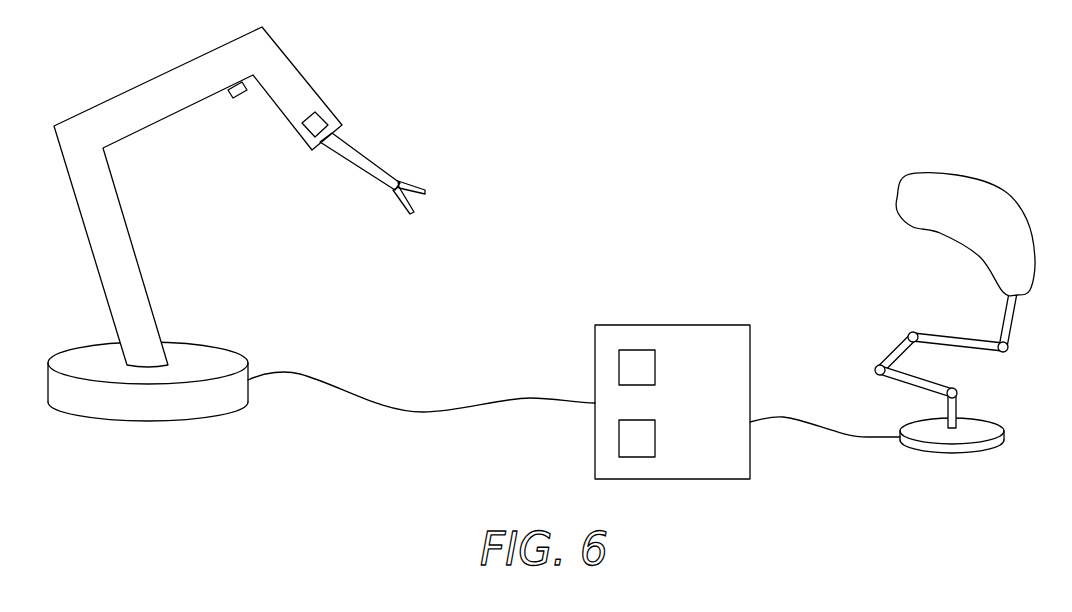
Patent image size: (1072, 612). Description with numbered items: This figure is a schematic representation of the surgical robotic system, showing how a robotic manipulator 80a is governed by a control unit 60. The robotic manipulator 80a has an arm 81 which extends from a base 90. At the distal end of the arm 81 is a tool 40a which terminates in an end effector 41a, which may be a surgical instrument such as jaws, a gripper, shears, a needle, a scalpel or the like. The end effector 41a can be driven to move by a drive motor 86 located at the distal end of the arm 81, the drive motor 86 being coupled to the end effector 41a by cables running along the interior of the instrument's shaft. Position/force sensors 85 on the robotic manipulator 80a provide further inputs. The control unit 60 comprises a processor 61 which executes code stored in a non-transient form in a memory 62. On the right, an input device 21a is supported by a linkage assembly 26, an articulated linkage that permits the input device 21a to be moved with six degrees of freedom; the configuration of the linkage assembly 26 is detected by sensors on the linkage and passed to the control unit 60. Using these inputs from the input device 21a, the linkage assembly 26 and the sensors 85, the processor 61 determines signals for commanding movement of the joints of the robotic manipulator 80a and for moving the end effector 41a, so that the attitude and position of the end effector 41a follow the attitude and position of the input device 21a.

The robotic manipulator 80a is at (263, 197).
The arm 81 is at (133, 237).
The manipulator position/force sensors 85 is at (241, 97).
The drive motor 86 is at (327, 110).
The tool 40a is at (404, 182).
The end effector 41a is at (418, 203).
The base 90 is at (148, 422).
The control unit 60 is at (672, 374).
The processor 61 is at (655, 367).
The memory 62 is at (655, 437).
The input device 21a is at (930, 172).
The linkage assembly 26 is at (987, 377).